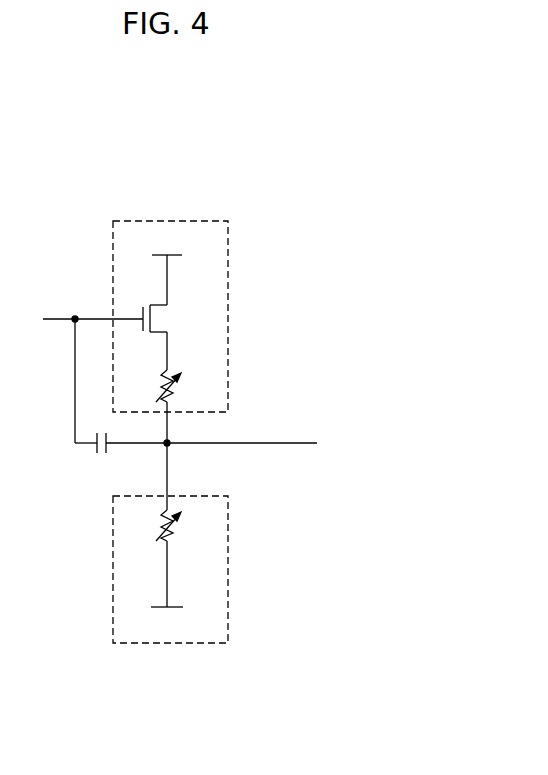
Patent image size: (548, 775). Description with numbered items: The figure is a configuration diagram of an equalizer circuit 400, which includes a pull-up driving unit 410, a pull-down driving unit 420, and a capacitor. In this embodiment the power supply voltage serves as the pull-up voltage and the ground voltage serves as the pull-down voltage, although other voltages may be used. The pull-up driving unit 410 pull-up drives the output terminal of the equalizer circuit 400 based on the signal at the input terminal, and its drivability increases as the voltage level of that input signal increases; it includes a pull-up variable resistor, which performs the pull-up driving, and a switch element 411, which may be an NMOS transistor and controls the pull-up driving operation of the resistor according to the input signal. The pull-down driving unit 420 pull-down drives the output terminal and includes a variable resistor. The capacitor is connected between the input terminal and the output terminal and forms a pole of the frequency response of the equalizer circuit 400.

The equalizer circuit 400 is at (292, 304).
The pull-up driving unit 410 is at (187, 220).
The switch element 411 is at (164, 321).
The pull-down driving unit 420 is at (185, 496).